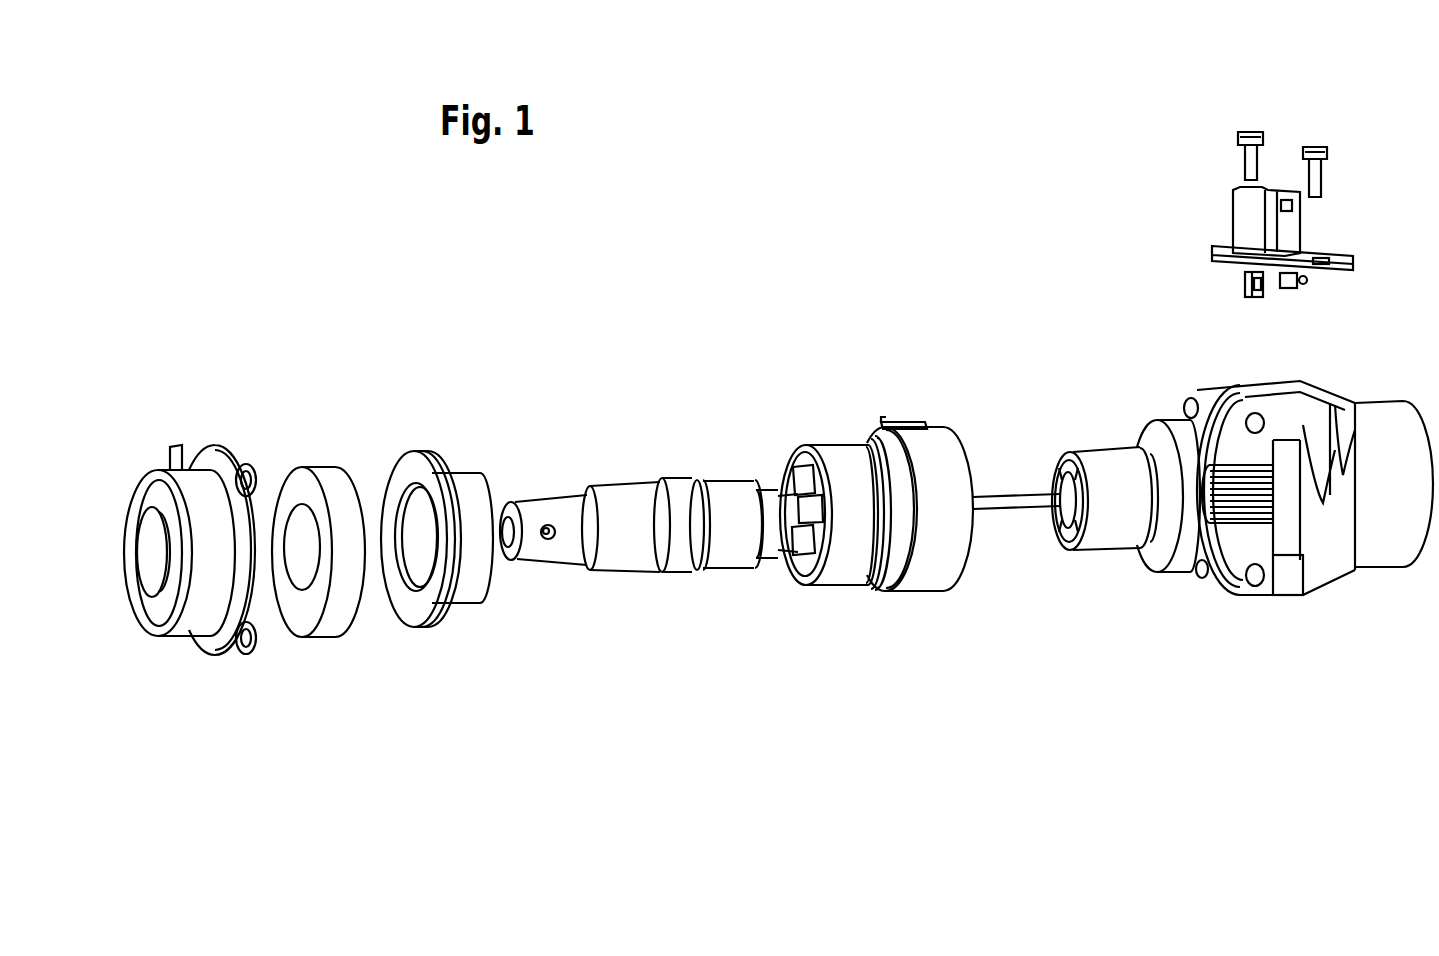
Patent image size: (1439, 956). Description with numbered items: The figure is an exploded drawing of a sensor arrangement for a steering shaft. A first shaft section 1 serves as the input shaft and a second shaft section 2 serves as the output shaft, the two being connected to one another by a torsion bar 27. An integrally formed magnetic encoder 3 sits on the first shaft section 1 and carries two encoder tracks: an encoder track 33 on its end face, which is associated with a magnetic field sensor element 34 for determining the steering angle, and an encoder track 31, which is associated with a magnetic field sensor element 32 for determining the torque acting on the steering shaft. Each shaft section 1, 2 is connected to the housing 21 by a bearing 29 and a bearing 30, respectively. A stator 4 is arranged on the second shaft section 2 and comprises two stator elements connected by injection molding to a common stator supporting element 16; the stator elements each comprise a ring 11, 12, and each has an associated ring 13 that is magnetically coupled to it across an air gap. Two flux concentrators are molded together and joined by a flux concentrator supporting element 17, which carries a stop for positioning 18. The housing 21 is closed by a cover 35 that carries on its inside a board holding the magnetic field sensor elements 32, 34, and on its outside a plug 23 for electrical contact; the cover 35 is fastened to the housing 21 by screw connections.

The first shaft section 1 is at (619, 474).
The second shaft section 2 is at (1081, 444).
The magnetic encoder 3 is at (404, 442).
The stator 4 is at (791, 443).
The ring 11 is at (812, 588).
The ring 12 is at (860, 588).
The ring 13 is at (885, 590).
The stator supporting element 16 is at (840, 460).
The flux concentrator supporting element 17 is at (941, 447).
The stop for positioning 18 is at (889, 413).
The housing 21 is at (1323, 568).
The plug 23 is at (1293, 224).
The torsion bar 27 is at (1008, 495).
The bearing 29 is at (323, 483).
The bearing 30 is at (1177, 556).
The encoder track 31 is at (457, 477).
The magnetic field sensor element 32 is at (1293, 292).
The encoder track 33 is at (458, 614).
The magnetic field sensor element 34 is at (1233, 283).
The cover 35 is at (1273, 172).